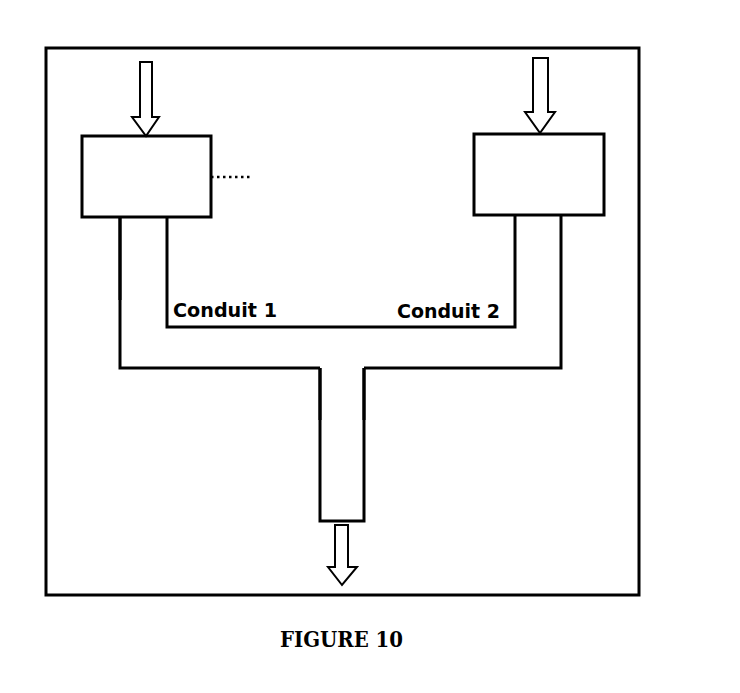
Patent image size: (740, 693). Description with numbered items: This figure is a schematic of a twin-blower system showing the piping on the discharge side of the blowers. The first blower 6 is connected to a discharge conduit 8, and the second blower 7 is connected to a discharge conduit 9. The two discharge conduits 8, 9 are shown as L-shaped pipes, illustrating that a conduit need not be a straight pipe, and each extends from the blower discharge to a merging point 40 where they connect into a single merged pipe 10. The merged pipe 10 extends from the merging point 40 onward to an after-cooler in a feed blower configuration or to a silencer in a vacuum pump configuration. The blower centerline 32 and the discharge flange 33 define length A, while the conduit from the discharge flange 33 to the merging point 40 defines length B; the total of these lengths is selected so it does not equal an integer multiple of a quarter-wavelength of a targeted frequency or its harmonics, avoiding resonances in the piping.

The blower 1 6 is at (158, 178).
The blower 2 7 is at (550, 175).
The discharge conduit 8 is at (209, 292).
The discharge conduit 9 is at (475, 291).
The merged pipe 10 is at (394, 444).
The blower centerline 32 is at (245, 177).
The discharge flange 33 is at (135, 258).
The merging point 40 is at (373, 395).